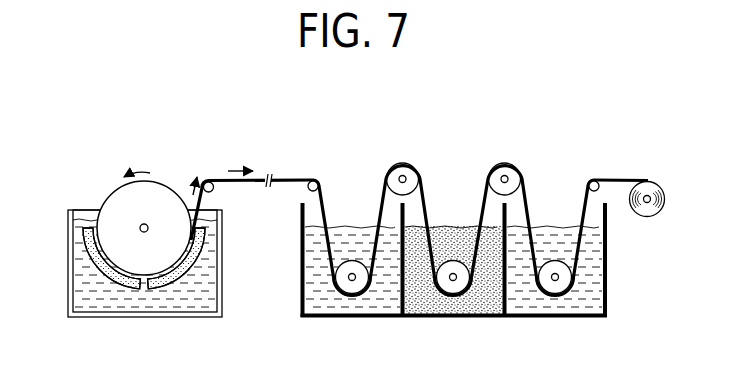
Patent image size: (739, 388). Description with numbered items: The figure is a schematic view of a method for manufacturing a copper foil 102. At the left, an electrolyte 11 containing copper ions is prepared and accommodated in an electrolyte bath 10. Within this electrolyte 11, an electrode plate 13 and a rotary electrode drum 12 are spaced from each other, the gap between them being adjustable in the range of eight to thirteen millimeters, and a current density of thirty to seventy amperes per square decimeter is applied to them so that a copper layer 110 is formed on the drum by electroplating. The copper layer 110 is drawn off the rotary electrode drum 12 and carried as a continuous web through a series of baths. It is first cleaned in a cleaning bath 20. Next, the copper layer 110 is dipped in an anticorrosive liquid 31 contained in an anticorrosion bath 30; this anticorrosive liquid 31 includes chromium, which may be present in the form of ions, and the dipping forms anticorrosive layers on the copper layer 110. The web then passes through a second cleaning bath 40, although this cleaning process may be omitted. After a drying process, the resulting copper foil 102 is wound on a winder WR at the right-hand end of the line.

The electrolyte bath 10 is at (150, 317).
The electrolyte 11 is at (200, 301).
The rotary electrode drum 12 is at (108, 207).
The electrode plate 13 is at (122, 298).
The copper layer 110 is at (207, 176).
The copper foil 102 is at (600, 180).
The cleaning bath 20 is at (349, 318).
The anticorrosion bath 30 is at (452, 318).
The anticorrosive liquid 31 is at (491, 290).
The cleaning bath 40 is at (552, 318).
The winder WR is at (652, 186).